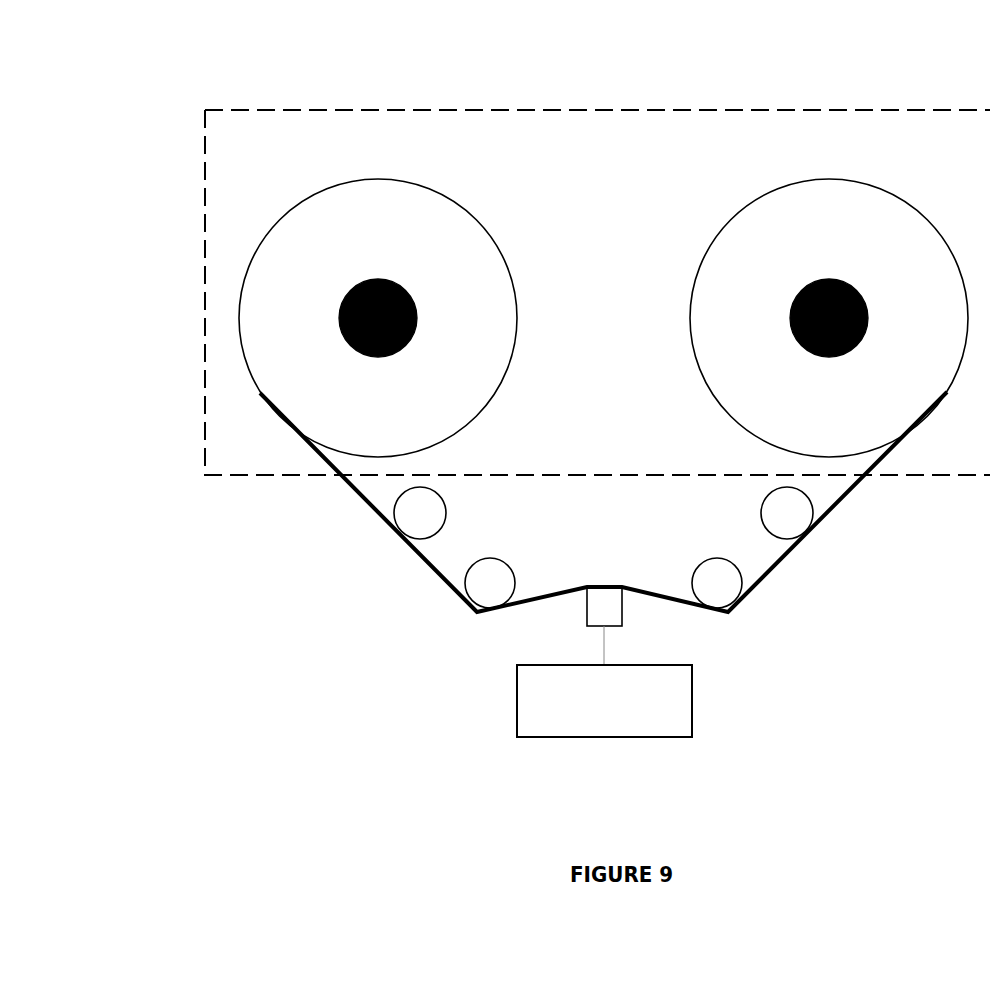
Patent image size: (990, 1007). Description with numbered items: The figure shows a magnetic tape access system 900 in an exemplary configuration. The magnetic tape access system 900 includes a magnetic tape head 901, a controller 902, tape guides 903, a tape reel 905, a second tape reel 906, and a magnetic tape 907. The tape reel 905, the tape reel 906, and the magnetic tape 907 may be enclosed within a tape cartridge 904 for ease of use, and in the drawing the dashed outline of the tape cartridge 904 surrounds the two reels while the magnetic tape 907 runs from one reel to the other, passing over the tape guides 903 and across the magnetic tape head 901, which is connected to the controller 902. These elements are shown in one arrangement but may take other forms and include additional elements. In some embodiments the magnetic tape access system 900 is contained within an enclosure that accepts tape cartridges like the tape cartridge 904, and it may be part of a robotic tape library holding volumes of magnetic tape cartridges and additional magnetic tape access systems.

The magnetic tape access system 900 is at (100, 110).
The magnetic tape head 901 is at (622, 618).
The controller 902 is at (604, 701).
The tape guides 903 is at (447, 508).
The tape cartridge 904 is at (882, 110).
The tape reel 905 is at (372, 280).
The tape reel 906 is at (823, 280).
The magnetic tape 907 is at (777, 567).